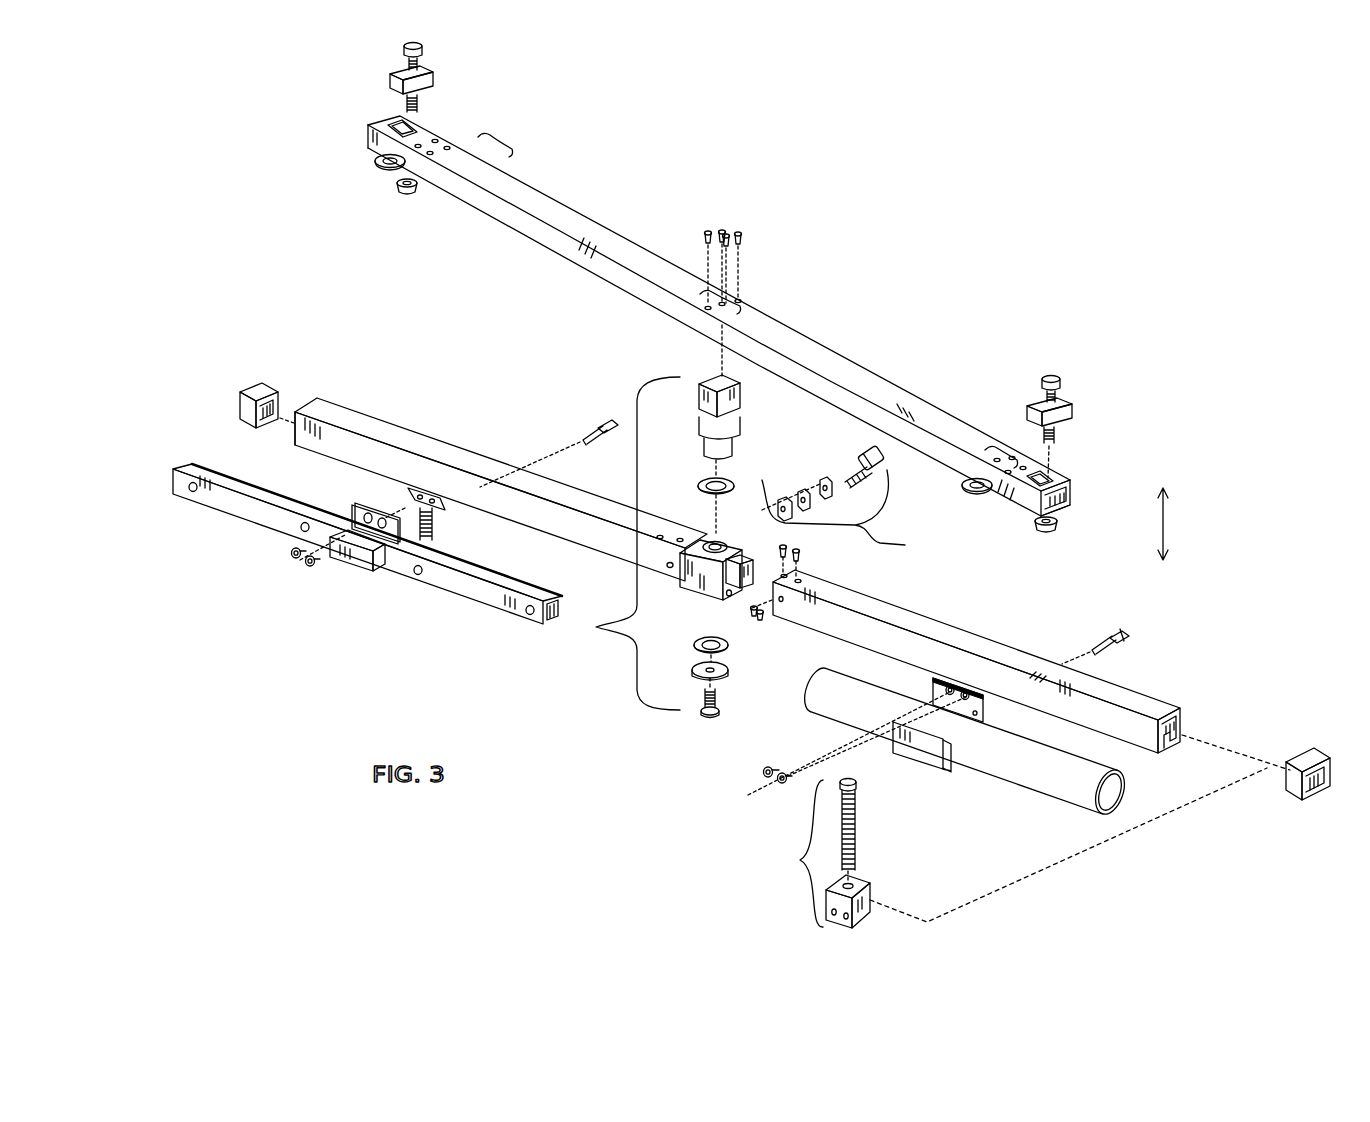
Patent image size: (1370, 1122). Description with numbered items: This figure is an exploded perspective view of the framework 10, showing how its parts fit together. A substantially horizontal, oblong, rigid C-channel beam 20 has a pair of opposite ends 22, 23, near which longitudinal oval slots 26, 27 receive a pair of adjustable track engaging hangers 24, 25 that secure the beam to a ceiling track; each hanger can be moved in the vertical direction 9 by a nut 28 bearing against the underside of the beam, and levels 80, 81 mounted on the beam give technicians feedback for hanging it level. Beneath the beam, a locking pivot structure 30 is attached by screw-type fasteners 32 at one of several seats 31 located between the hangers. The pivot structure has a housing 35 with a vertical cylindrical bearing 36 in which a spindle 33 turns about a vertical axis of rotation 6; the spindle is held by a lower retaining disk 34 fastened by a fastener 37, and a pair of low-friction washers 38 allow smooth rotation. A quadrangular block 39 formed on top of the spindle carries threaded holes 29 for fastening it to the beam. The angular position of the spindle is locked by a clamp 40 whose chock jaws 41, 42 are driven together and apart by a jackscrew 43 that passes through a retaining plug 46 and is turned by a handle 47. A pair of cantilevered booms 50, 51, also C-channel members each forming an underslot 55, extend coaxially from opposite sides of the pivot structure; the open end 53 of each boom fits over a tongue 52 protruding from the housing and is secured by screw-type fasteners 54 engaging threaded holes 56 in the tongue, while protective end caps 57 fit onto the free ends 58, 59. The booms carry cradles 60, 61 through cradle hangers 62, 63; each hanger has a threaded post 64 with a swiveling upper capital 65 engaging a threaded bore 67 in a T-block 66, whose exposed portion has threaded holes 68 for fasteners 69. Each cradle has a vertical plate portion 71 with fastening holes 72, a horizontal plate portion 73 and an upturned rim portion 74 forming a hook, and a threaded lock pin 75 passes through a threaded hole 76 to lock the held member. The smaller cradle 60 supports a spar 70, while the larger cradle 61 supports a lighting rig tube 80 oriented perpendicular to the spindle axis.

The axis of rotation 6 is at (710, 540).
The vertical direction 9 is at (1170, 492).
The framework 10 is at (982, 292).
The beam 20 is at (600, 222).
The beam end 22 is at (366, 133).
The beam end 23 is at (1076, 500).
The track engaging hanger 24 is at (437, 80).
The track engaging hanger 25 is at (1075, 412).
The longitudinal oval slot 26 is at (388, 122).
The longitudinal oval slot 27 is at (1055, 480).
The nut 28 is at (400, 196).
The threaded holes 29 is at (704, 378).
The locking pivot structure 30 is at (594, 627).
The seats 31 is at (480, 138).
The screw-type fasteners 32 is at (740, 230).
The spindle 33 is at (702, 432).
The lower retaining disk 34 is at (693, 671).
The housing 35 is at (690, 593).
The cylindrical bearing 36 is at (718, 542).
The fastener 37 is at (719, 706).
The low-friction washers 38 is at (700, 482).
The quadrangular block 39 is at (700, 400).
The clamp 40 is at (844, 518).
The distal chock jaw 41 is at (782, 500).
The proximal chock jaw 42 is at (803, 494).
The jackscrew 43 is at (850, 473).
The retaining plug 46 is at (822, 482).
The handle 47 is at (866, 454).
The cantilevered boom 50 is at (375, 410).
The cantilevered boom 51 is at (1145, 690).
The tongue 52 is at (745, 565).
The open end 53 is at (790, 595).
The screw-type fasteners 54 is at (756, 622).
The underslot 55 is at (1166, 760).
The threaded holes 56 is at (730, 598).
The protective end caps 57 is at (262, 382).
The free end 58 is at (312, 400).
The free end 59 is at (1183, 718).
The cradle 60 is at (355, 572).
The cradle 61 is at (965, 800).
The cradle hanger 62 is at (430, 500).
The cradle hanger 63 is at (800, 862).
The threaded post 64 is at (856, 838).
The swiveling upper capital 65 is at (858, 782).
The T-block 66 is at (866, 914).
The threaded bore 67 is at (855, 880).
The threaded holes 68 is at (835, 920).
The fasteners 69 is at (770, 781).
The spar 70 is at (245, 508).
The vertical plate portion 71 is at (933, 690).
The fastening holes 72 is at (966, 690).
The horizontal plate portion 73 is at (952, 766).
The rim portion 74 is at (930, 760).
The threaded lock pin 75 is at (1128, 632).
The threaded hole 76 is at (1012, 700).
The level 80 is at (380, 166).
The level 81 is at (965, 490).